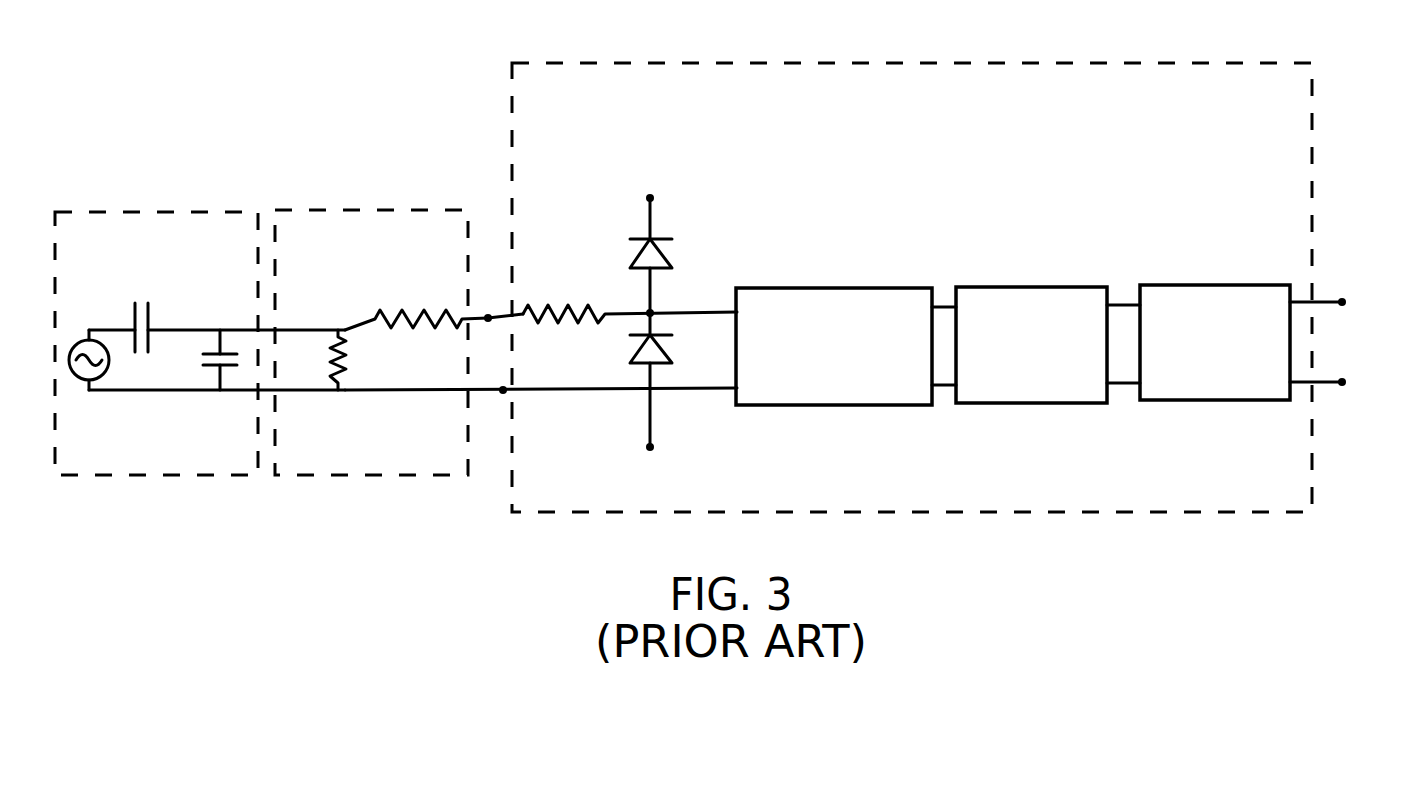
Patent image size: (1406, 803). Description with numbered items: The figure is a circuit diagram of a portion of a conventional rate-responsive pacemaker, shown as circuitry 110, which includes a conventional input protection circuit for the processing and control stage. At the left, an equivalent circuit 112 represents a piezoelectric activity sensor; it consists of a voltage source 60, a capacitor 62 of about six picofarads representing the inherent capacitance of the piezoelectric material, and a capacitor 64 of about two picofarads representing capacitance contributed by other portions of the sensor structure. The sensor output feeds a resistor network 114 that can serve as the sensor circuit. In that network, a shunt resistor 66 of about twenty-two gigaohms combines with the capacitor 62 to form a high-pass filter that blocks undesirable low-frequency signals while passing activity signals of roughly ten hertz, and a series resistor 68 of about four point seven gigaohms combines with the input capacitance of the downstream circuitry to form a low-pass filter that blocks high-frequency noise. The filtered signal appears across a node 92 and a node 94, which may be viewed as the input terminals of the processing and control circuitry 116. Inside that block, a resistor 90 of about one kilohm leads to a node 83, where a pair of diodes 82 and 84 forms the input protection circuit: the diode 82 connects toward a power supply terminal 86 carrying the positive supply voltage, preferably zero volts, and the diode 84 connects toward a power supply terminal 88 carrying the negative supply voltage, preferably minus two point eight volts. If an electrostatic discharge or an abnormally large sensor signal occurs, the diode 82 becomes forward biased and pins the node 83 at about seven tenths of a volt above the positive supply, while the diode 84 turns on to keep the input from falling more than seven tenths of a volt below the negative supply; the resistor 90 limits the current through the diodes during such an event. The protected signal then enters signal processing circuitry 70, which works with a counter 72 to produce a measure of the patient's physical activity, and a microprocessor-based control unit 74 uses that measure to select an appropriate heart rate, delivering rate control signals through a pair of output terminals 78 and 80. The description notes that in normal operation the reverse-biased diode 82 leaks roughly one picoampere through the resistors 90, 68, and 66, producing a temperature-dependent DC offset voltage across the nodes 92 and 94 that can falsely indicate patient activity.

The circuitry 110 is at (197, 66).
The equivalent circuit 112 is at (105, 212).
The resistor network 114 is at (315, 210).
The processing and control circuitry 116 is at (790, 63).
The voltage source 60 is at (88, 340).
The capacitor 62 is at (138, 304).
The capacitor 64 is at (214, 366).
The resistor 66 is at (333, 360).
The resistor 68 is at (430, 328).
The resistor 90 is at (557, 306).
The node 92 is at (488, 314).
The node 94 is at (503, 394).
The diode 82 is at (668, 258).
The node 83 is at (652, 311).
The diode 84 is at (668, 353).
The power supply terminal 86 is at (655, 199).
The power supply terminal 88 is at (654, 447).
The signal processing circuitry 70 is at (855, 288).
The counter 72 is at (1035, 287).
The control unit 74 is at (1218, 285).
The output terminal 78 is at (1345, 301).
The output terminal 80 is at (1345, 381).